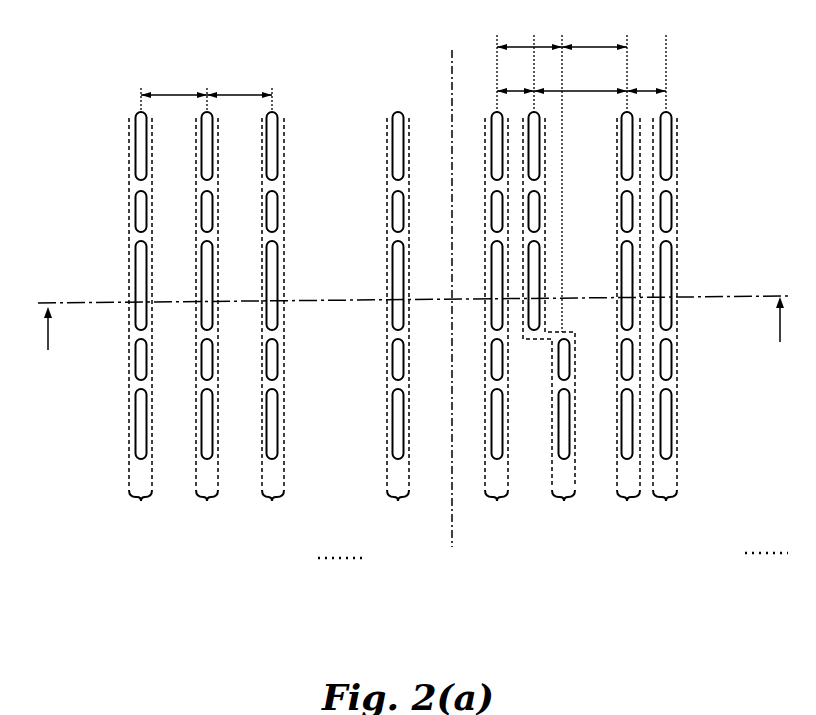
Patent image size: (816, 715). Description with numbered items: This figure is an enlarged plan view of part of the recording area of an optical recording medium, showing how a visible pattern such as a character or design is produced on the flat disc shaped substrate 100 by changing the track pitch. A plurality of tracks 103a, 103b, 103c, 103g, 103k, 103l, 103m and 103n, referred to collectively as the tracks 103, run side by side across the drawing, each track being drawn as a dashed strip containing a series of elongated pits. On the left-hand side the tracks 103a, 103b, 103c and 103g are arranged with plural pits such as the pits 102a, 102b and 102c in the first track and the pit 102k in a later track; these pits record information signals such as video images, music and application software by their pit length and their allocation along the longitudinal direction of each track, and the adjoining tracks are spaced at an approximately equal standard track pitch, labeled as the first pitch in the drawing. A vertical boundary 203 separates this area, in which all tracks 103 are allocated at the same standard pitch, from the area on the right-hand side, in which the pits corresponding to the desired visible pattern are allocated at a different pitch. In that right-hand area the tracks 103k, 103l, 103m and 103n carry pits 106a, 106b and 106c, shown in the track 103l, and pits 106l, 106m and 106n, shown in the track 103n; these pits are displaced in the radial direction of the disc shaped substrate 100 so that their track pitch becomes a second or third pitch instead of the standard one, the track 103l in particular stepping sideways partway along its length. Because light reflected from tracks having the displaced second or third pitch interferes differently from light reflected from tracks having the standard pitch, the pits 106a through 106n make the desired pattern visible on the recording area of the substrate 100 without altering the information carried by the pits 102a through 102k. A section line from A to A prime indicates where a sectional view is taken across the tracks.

The disc shaped substrate 100 is at (358, 42).
The pit 102a is at (138, 162).
The pit 102b is at (138, 220).
The pit 102c is at (138, 275).
The pit 102k is at (398, 270).
The track 103 is at (210, 635).
The track 103a is at (97, 340).
The track 103b is at (207, 503).
The track 103c is at (272, 503).
The track 103g is at (362, 340).
The track 103k is at (497, 503).
The track 103l is at (568, 340).
The track 103m is at (627, 503).
The track 103n is at (712, 340).
The pit 106a is at (535, 153).
The pit 106b is at (534, 212).
The pit 106c is at (534, 274).
The pit 106l is at (663, 143).
The pit 106m is at (665, 211).
The pit 106n is at (665, 282).
The boundary 203 is at (452, 533).